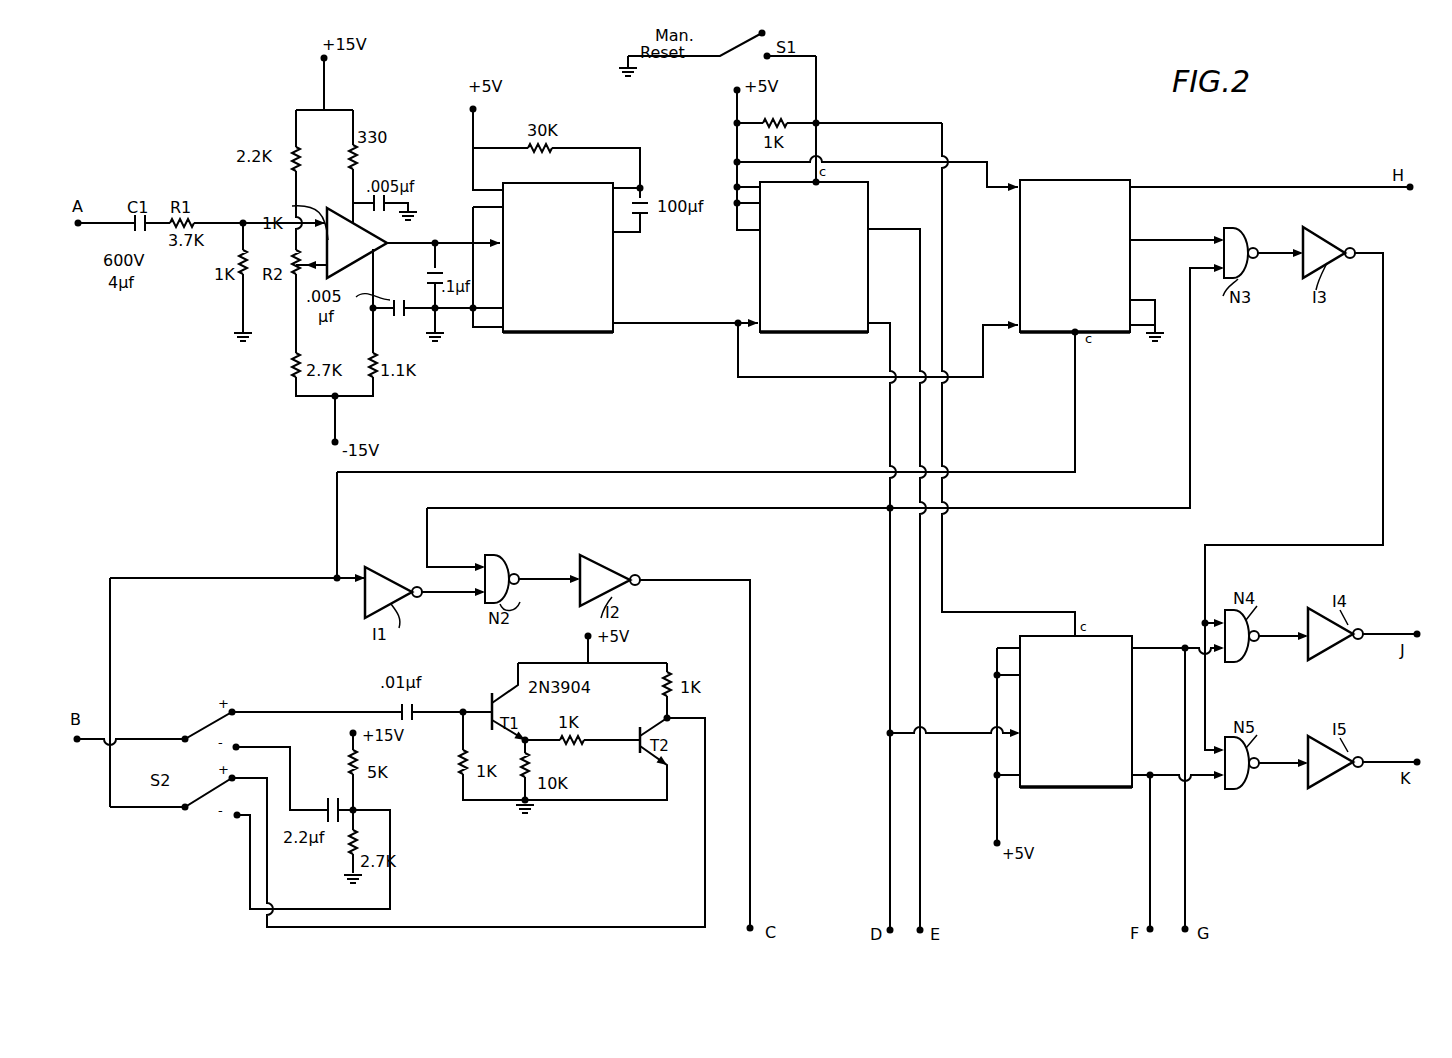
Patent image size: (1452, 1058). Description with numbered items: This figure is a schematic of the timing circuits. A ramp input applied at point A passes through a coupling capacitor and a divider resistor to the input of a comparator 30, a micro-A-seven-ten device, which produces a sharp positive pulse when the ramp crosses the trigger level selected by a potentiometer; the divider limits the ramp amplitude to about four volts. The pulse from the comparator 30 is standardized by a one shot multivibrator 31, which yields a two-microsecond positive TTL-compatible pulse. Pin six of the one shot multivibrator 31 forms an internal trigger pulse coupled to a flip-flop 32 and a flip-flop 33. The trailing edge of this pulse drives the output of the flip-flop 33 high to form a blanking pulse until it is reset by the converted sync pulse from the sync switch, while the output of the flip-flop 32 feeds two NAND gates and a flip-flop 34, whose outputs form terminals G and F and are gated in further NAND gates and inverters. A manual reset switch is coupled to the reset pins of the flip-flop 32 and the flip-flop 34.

The comparator 30 is at (385, 249).
The one shot multivibrator 31 is at (603, 333).
The flip-flop 32 is at (858, 333).
The flip-flop 33 is at (1127, 333).
The flip-flop 34 is at (1072, 788).